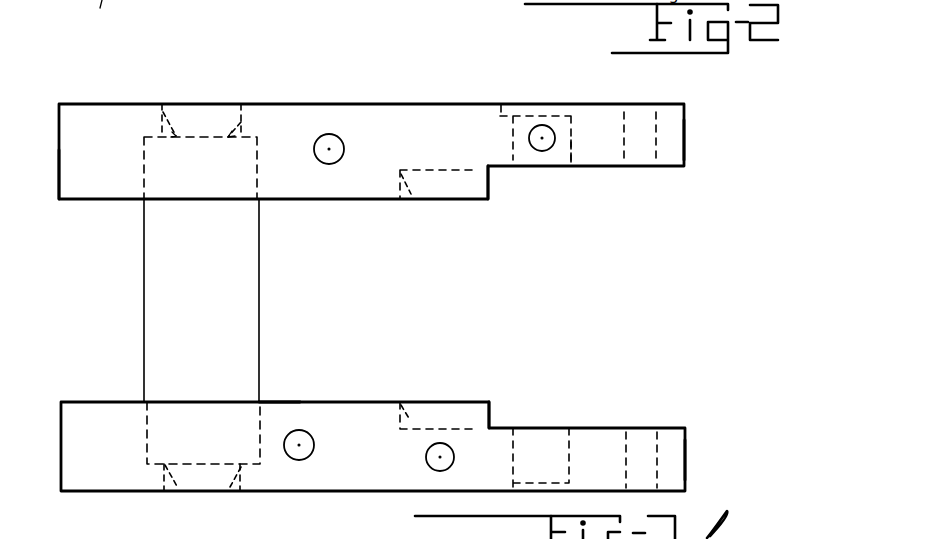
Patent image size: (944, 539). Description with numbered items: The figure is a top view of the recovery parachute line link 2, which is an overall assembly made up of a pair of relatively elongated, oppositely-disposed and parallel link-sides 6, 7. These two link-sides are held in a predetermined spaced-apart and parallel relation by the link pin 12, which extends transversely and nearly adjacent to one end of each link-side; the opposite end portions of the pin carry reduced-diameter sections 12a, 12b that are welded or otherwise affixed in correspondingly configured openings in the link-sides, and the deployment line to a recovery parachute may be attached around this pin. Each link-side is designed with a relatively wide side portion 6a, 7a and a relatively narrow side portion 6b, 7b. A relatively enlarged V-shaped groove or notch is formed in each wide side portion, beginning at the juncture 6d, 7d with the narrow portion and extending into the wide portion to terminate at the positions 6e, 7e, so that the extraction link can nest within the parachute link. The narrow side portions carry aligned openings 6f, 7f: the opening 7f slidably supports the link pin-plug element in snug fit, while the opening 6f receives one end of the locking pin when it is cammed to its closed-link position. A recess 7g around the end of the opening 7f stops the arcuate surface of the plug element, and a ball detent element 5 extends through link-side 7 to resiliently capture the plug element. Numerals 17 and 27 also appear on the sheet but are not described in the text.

The recovery parachute line link 2 is at (618, 184).
The ball detent element 5 is at (556, 136).
The parachute link-side 6 is at (354, 485).
The relatively wide side portion 6a is at (279, 410).
The relatively narrow side portion 6b is at (687, 456).
The juncture 6d is at (492, 408).
The notch termination position 6e is at (409, 404).
The opening 6f is at (567, 432).
The parachute link-side 7 is at (278, 130).
The relatively wide side portion 7a is at (92, 187).
The relatively narrow side portion 7b is at (686, 131).
The juncture 7d is at (489, 183).
The notch termination position 7e is at (401, 205).
The opening 7f is at (567, 158).
The recess 7g is at (577, 110).
The link pin 12 is at (157, 331).
The reduced-diameter section 12a is at (182, 105).
The reduced-diameter section 12b is at (238, 496).
The element of adjacent figure 17 is at (380, 2).
The element of adjacent figure 27 is at (300, 0).